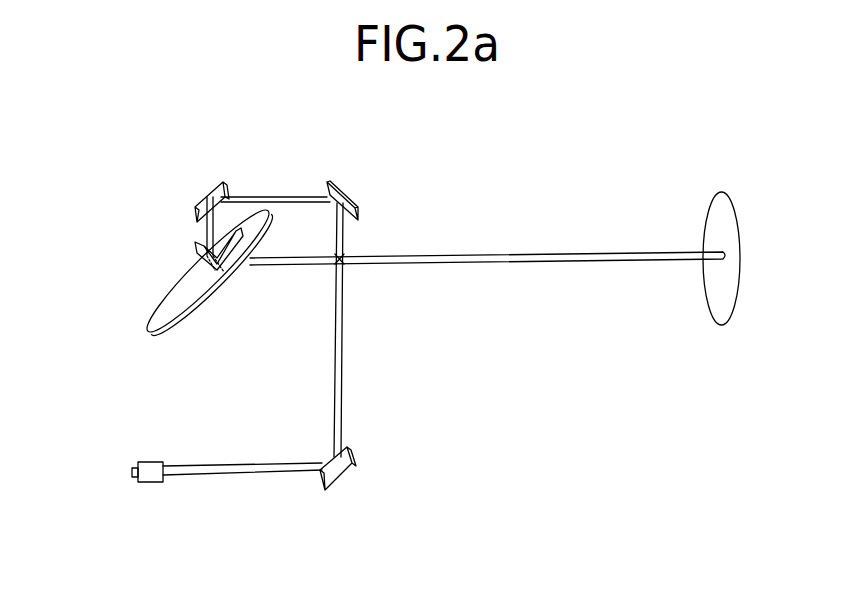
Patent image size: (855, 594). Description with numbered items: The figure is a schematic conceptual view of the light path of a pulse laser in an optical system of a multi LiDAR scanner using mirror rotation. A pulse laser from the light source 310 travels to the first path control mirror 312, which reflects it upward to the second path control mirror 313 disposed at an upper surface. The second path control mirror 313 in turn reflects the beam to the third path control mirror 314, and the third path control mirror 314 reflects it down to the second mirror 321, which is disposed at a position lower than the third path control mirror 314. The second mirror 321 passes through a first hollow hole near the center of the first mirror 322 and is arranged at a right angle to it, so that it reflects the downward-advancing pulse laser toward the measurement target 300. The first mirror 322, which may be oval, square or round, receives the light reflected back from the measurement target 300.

The measurement target 300 is at (722, 193).
The light source 310 is at (150, 482).
The first path control mirror 312 is at (335, 484).
The second path control mirror 313 is at (342, 197).
The third path control mirror 314 is at (213, 197).
The second mirror 321 is at (197, 244).
The first mirror 322 is at (162, 312).